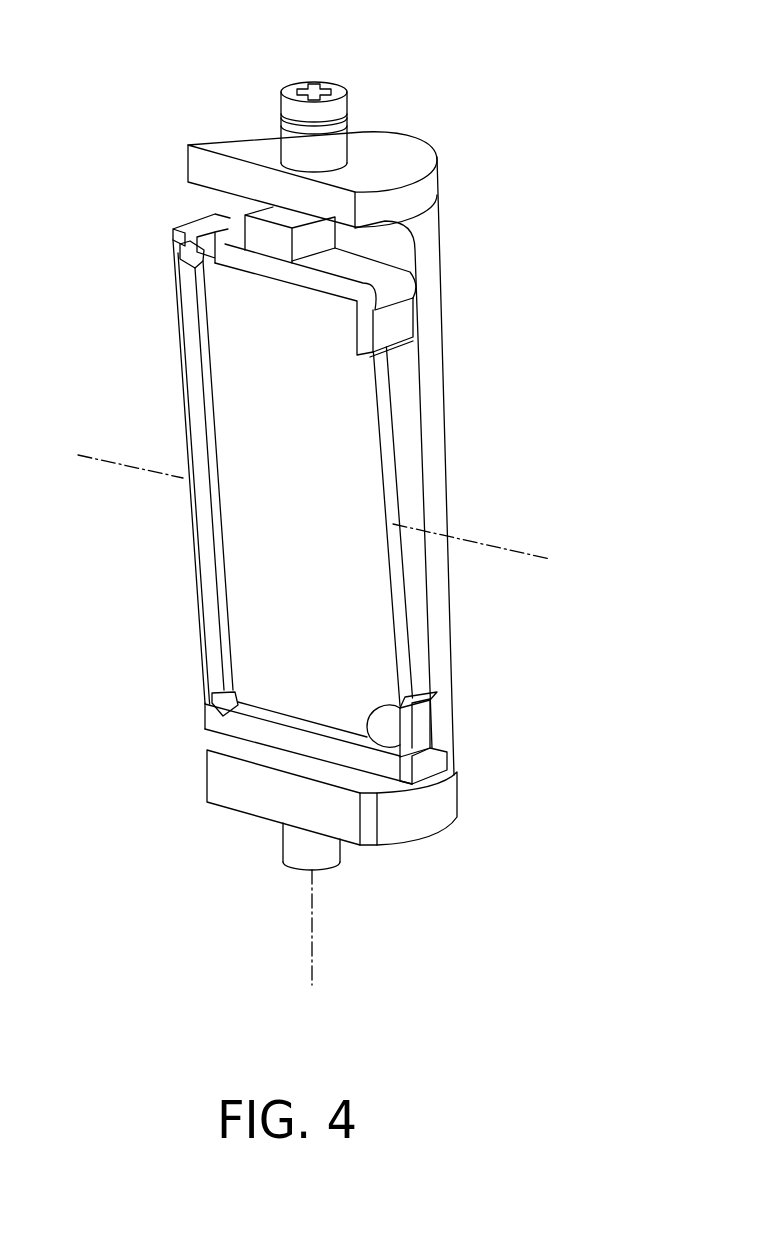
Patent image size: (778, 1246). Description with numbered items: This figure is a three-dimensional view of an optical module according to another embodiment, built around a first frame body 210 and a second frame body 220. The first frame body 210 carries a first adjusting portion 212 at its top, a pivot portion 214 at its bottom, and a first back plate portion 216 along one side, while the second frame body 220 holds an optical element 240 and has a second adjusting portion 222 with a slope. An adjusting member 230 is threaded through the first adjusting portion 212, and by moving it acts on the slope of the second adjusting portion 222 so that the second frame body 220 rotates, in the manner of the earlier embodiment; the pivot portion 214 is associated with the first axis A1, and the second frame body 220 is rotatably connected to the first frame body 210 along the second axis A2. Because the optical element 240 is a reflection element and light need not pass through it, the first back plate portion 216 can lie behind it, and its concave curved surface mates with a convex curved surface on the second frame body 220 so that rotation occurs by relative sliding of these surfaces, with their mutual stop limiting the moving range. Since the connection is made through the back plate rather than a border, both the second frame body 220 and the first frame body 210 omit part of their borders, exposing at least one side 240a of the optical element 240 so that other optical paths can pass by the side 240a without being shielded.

The first frame body 210 is at (473, 295).
The first adjusting portion 212 is at (388, 155).
The pivot portion 214 is at (250, 797).
The first back plate portion 216 is at (446, 455).
The second frame body 220 is at (233, 727).
The second adjusting portion 222 is at (270, 243).
The adjusting member 230 is at (336, 92).
The optical element 240 is at (366, 393).
The side of the optical element 240a is at (404, 632).
The first axis A1 is at (312, 937).
The second axis A2 is at (548, 557).